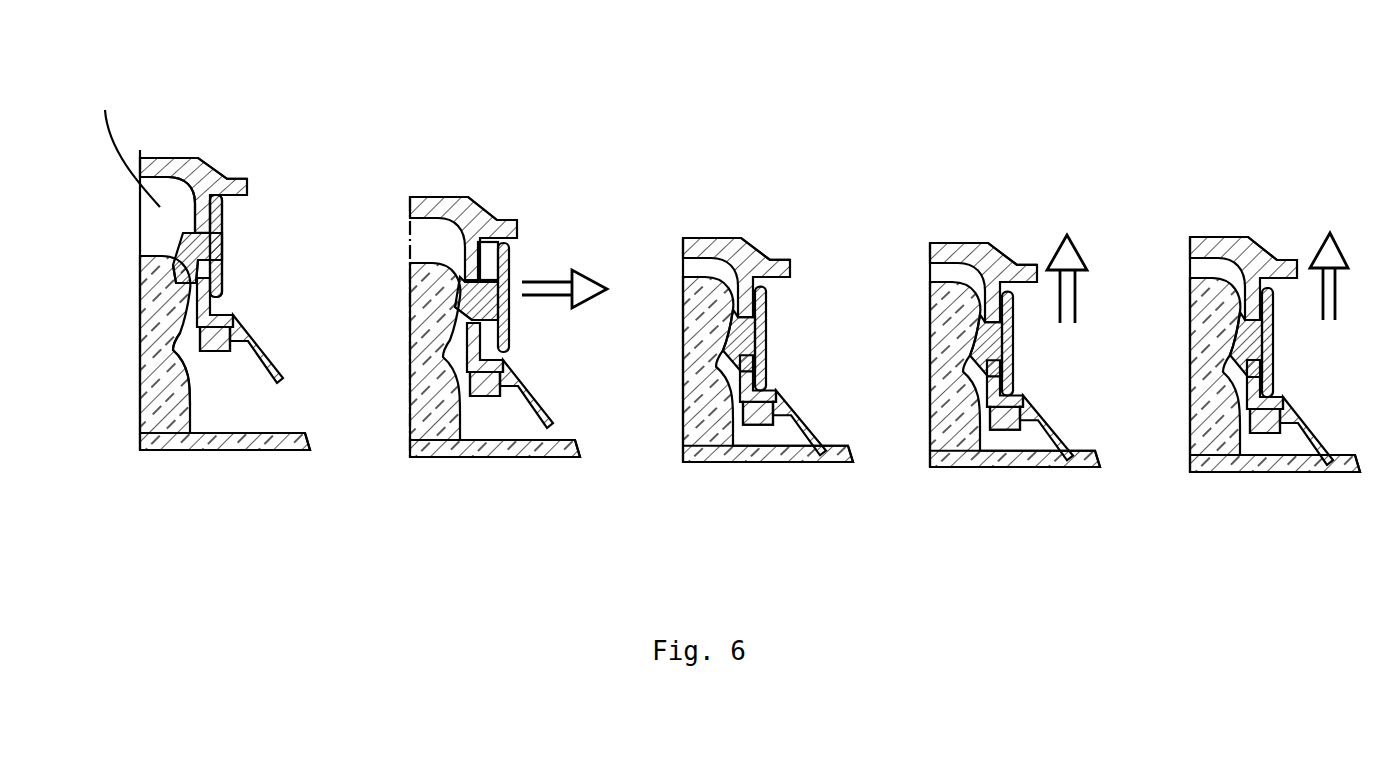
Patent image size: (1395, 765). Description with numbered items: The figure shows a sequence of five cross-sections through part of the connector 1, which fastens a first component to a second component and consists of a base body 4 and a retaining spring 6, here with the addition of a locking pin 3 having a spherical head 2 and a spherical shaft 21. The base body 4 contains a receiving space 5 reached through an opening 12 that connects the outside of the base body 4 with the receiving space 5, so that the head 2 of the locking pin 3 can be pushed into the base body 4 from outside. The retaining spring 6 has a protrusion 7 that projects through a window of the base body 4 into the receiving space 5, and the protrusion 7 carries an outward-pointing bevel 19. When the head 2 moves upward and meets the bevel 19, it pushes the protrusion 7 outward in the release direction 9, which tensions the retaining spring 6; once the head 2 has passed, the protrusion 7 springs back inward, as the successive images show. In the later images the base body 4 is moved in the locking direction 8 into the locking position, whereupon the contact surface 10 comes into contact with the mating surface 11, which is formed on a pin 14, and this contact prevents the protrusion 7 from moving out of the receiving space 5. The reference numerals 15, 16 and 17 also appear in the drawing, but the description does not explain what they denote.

The sealing arrangement 1 is at (235, 142).
The sealing element 2 is at (160, 270).
The housing 3 is at (128, 378).
The cover 4 is at (175, 160).
The housing wall 5 is at (129, 143).
The direction arrow 6 is at (224, 243).
The inner contour 7 is at (193, 248).
The direction arrow 8 is at (1203, 278).
The direction arrow 9 is at (564, 278).
The gap 10 is at (497, 323).
The support ring 11 is at (468, 340).
The channel 12 is at (200, 365).
The contact surface 14 is at (193, 300).
The support element 15 is at (203, 275).
The sealing lip 16 is at (173, 257).
The spring arm 17 is at (260, 352).
The sealing edge 19 is at (170, 278).
The base plate 21 is at (147, 410).